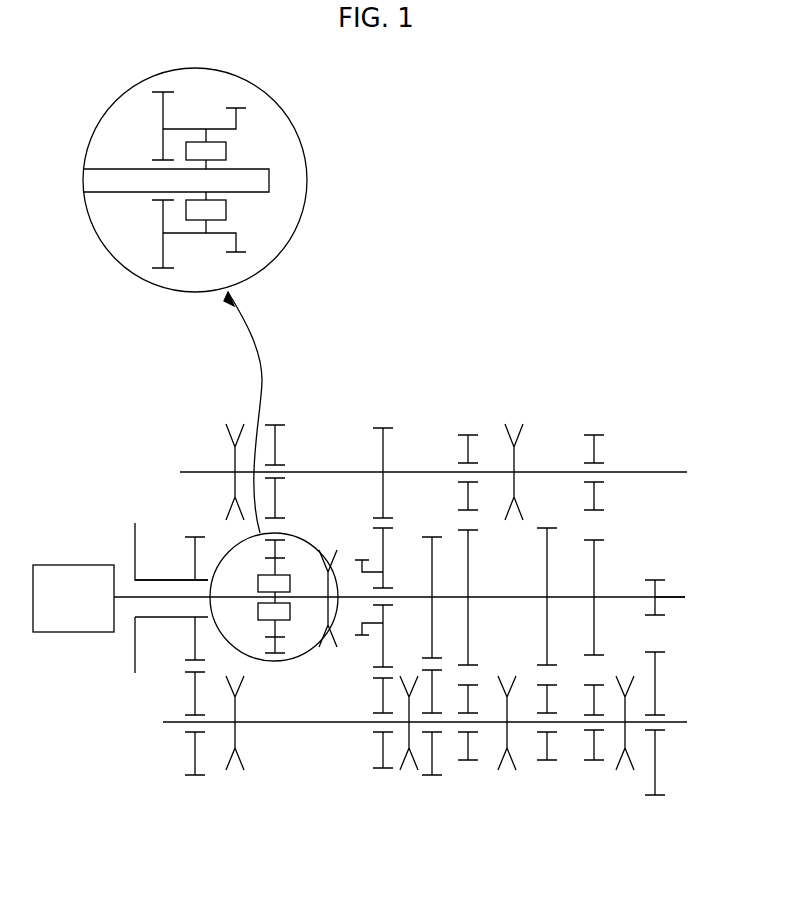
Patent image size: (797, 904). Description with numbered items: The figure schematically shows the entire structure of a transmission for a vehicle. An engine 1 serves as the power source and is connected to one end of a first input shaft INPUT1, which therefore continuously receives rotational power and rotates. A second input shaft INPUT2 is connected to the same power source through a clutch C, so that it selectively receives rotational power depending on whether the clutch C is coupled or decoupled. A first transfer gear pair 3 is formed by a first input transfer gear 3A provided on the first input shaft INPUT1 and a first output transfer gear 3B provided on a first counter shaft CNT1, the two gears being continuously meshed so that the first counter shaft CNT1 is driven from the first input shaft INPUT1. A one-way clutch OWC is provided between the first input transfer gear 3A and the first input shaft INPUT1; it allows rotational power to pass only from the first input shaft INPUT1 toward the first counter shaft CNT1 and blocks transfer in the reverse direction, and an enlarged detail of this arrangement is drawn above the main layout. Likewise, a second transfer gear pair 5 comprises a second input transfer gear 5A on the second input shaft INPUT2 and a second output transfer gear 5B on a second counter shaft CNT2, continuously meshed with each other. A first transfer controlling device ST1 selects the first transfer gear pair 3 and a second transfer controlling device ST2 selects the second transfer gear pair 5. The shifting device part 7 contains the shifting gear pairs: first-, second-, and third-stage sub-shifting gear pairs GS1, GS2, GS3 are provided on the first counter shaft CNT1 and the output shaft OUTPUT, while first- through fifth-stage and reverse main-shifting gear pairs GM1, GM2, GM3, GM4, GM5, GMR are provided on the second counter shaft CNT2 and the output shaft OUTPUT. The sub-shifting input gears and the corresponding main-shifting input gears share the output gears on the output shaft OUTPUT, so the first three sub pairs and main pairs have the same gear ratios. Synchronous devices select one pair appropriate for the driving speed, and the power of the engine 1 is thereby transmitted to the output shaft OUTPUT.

The engine 1 is at (65, 632).
The clutch C is at (133, 660).
The first input shaft INPUT1 is at (132, 182).
The second input shaft INPUT2 is at (160, 580).
The first transfer gear pair 3 is at (212, 391).
The first input transfer gear 3A is at (277, 550).
The first output transfer gear 3B is at (275, 445).
The one-way clutch OWC is at (265, 620).
The second transfer gear pair 5 is at (133, 678).
The second input transfer gear 5A is at (193, 645).
The second output transfer gear 5B is at (193, 753).
The shifting device part 7 is at (379, 468).
The first transfer controlling device ST1 is at (227, 438).
The second transfer controlling device ST2 is at (230, 765).
The 1-stage sub-shifting gear pair GS1 is at (469, 463).
The 2-stage sub-shifting gear pair GS2 is at (594, 463).
The 3-stage sub-shifting gear pair GS3 is at (381, 464).
The 1-stage main-shifting gear pair GM1 is at (468, 655).
The 2-stage main-shifting gear pair GM2 is at (595, 663).
The 3-stage main-shifting gear pair GM3 is at (377, 660).
The 4-stage main-shifting gear pair GM4 is at (430, 669).
The 5-stage main-shifting gear pair GM5 is at (658, 734).
The R-stage main-shifting gear pair GMR is at (546, 654).
The first counter shaft CNT1 is at (655, 472).
The second counter shaft CNT2 is at (673, 727).
The output shaft OUTPUT is at (670, 597).